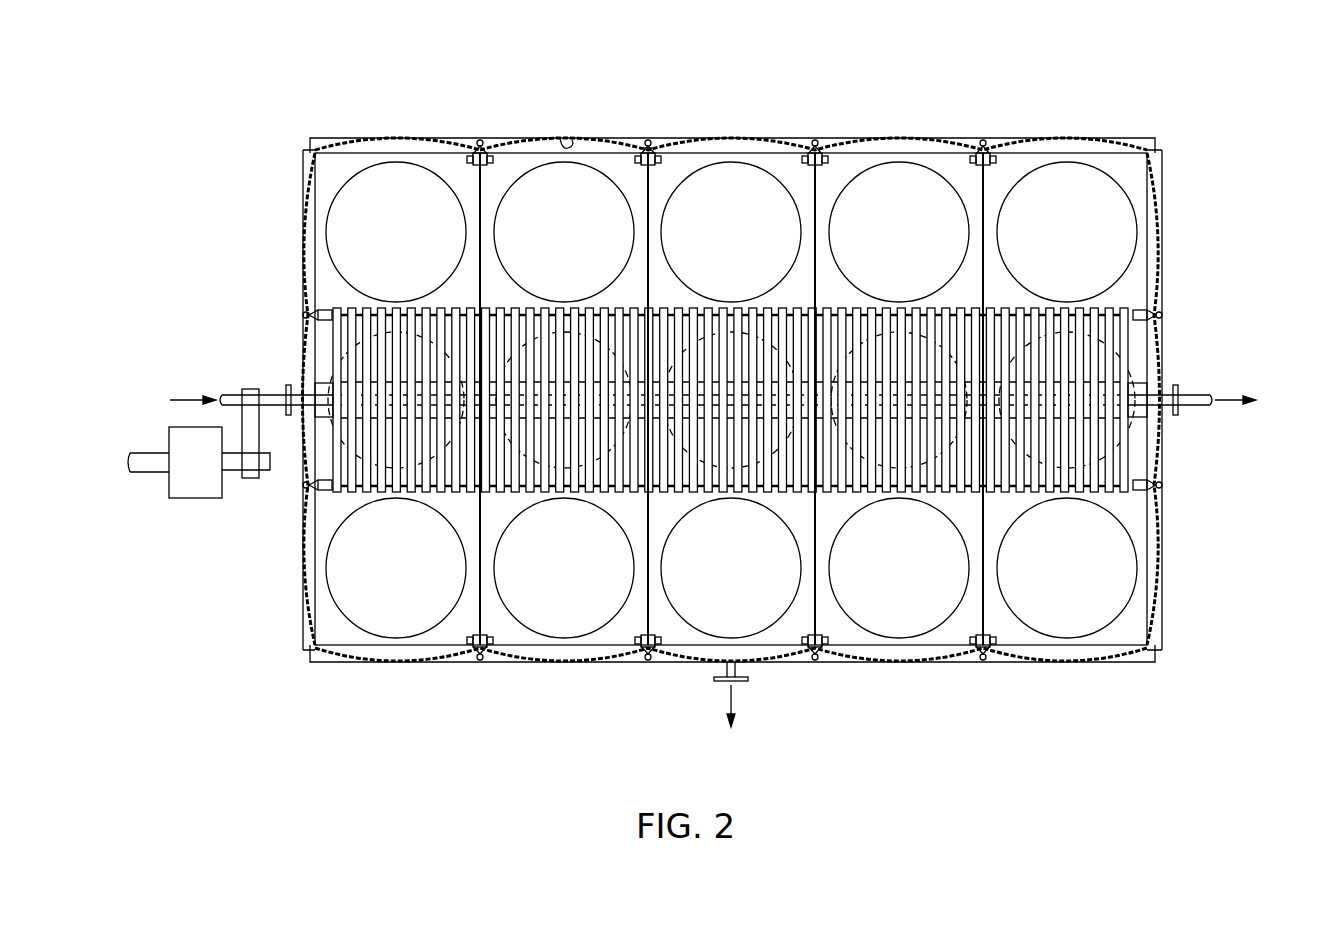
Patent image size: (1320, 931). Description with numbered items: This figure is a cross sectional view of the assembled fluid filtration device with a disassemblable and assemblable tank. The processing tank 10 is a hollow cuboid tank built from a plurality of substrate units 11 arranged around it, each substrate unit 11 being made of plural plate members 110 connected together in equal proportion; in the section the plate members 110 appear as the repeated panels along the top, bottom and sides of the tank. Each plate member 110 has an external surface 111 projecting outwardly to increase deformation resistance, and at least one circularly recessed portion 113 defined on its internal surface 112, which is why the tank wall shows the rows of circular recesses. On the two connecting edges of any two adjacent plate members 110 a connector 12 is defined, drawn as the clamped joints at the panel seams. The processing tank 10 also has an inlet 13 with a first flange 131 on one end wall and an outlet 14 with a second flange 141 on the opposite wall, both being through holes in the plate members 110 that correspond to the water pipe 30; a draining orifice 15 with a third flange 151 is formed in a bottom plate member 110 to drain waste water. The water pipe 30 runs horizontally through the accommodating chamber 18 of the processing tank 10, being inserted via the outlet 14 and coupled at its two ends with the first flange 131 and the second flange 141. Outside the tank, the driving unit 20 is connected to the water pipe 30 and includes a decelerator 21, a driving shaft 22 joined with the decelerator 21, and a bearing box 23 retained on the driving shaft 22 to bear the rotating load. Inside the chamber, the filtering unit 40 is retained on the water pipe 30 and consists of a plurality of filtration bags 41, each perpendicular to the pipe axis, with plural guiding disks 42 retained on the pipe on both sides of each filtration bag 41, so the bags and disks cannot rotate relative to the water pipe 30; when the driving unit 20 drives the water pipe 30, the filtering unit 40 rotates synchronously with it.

The processing tank 10 is at (743, 112).
The substrate unit 11 is at (1092, 45).
The plate member 110 is at (917, 130).
The external surface 111 is at (522, 140).
The internal surface 112 is at (636, 153).
The circularly recessed portion 113 is at (568, 140).
The connector 12 is at (300, 308).
The inlet 13 is at (306, 390).
The first flange 131 is at (287, 388).
The outlet 14 is at (1152, 393).
The second flange 141 is at (1178, 390).
The draining orifice 15 is at (735, 662).
The third flange 151 is at (748, 680).
The accommodating chamber 18 is at (330, 165).
The driving unit 20 is at (197, 518).
The decelerator 21 is at (172, 500).
The driving shaft 22 is at (233, 470).
The bearing box 23 is at (258, 480).
The water pipe 30 is at (1142, 418).
The filtering unit 40 is at (892, 300).
The filtration bag 41 is at (725, 310).
The guiding disk 42 is at (567, 389).